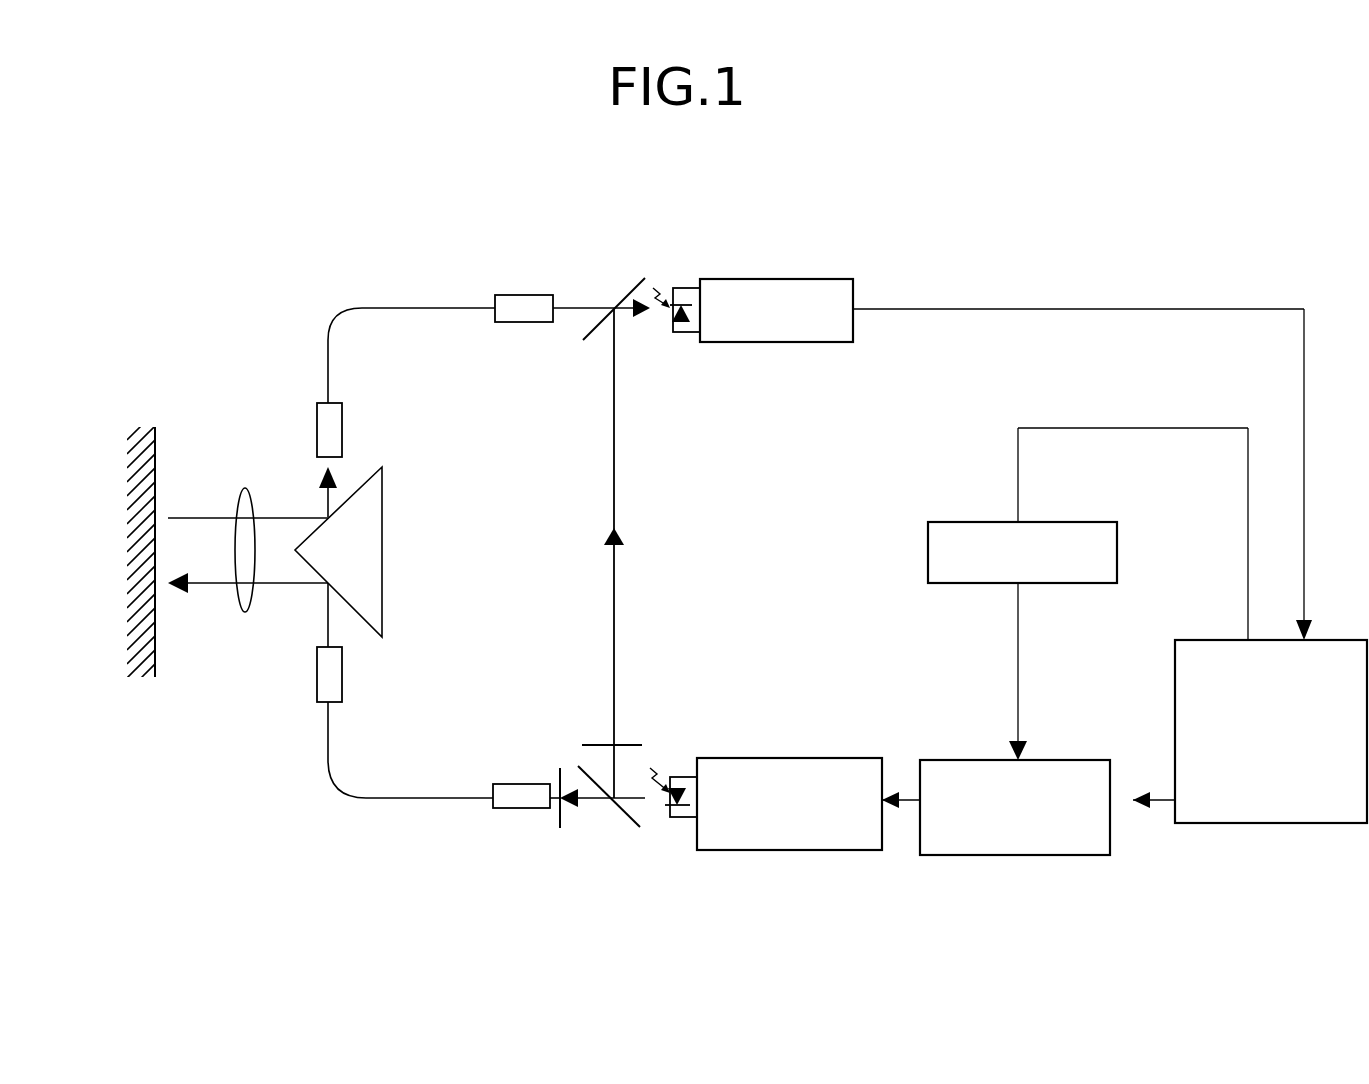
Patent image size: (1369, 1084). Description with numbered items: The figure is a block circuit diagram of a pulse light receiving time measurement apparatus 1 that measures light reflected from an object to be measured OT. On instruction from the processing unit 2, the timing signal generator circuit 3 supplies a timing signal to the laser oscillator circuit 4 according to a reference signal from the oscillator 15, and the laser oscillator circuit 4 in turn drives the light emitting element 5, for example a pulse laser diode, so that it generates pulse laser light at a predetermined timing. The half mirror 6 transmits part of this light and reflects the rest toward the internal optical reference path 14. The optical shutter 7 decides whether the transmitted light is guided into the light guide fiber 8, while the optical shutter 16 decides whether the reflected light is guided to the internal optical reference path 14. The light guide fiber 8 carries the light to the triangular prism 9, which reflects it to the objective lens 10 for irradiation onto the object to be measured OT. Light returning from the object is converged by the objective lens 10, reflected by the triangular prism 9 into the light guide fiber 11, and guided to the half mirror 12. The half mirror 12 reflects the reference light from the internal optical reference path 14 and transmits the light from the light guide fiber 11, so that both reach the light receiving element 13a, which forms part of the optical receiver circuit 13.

The pulse light receiving time measurement apparatus 1 is at (1142, 280).
The processing unit 2 is at (1262, 823).
The timing signal generator circuit 3 is at (1033, 855).
The laser oscillator circuit 4 is at (797, 850).
The light emitting element 5 is at (680, 777).
The half mirror 6 is at (627, 813).
The optical shutter 7 is at (560, 768).
The light guide fiber 8 is at (387, 798).
The triangular prism 9 is at (382, 565).
The objective lens 10 is at (240, 613).
The light guide fiber 11 is at (430, 307).
The half mirror 12 is at (628, 298).
The optical receiver circuit 13 is at (852, 275).
The light receiving element 13a is at (685, 285).
The internal optical reference path 14 is at (614, 470).
The oscillator 15 is at (962, 522).
The optical shutter 16 is at (625, 745).
The object to be measured OT is at (120, 603).